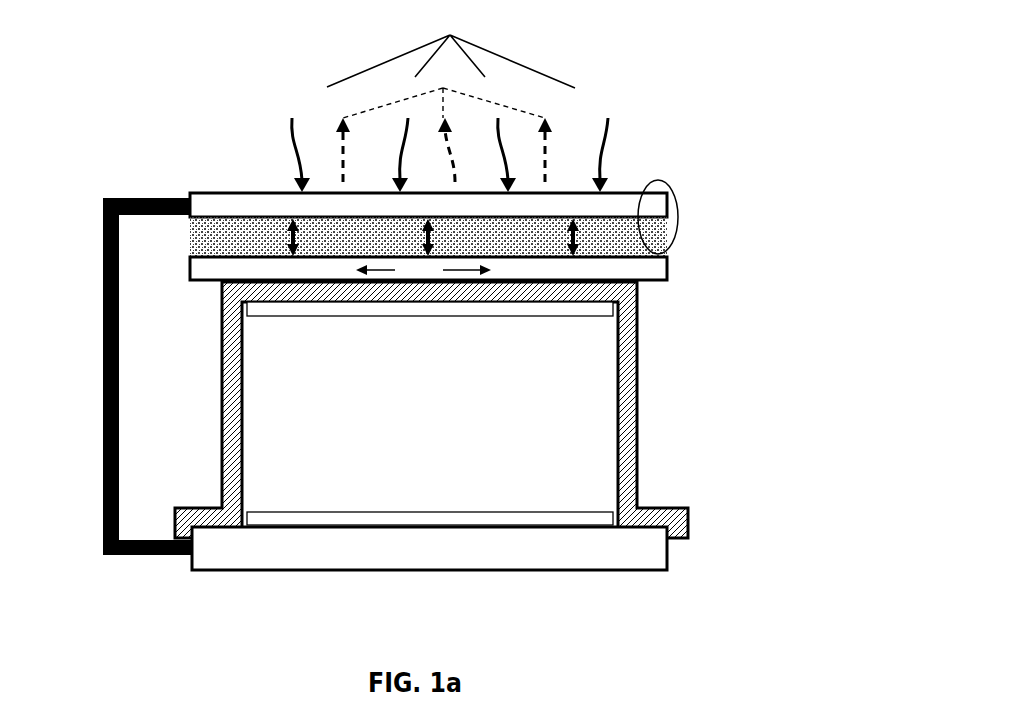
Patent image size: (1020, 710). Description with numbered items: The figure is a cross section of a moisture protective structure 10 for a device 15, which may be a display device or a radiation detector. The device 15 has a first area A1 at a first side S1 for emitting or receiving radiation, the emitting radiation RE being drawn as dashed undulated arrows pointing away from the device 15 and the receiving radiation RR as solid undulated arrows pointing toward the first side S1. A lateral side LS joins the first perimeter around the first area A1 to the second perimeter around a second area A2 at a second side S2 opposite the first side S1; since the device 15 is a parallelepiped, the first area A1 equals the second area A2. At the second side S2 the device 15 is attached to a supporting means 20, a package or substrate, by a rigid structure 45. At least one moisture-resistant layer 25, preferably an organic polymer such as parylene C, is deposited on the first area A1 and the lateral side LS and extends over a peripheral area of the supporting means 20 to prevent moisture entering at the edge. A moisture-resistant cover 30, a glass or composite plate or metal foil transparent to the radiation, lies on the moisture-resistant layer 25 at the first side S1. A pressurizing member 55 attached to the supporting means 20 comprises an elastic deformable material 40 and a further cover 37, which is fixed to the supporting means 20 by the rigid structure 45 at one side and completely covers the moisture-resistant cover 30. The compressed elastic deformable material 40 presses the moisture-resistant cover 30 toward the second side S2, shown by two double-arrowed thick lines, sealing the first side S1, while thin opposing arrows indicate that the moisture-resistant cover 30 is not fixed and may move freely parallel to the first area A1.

The moisture protective structure 10 is at (765, 193).
The device 15 is at (262, 477).
The supporting means 20 is at (570, 555).
The moisture-resistant layer 25 is at (627, 377).
The moisture-resistant cover 30 is at (650, 270).
The further cover 37 is at (663, 205).
The elastic deformable material 40 is at (197, 235).
The rigid structure 45 is at (102, 435).
The pressurizing member 55 is at (680, 227).
The first area A1 is at (437, 316).
The second area A2 is at (437, 512).
The lateral side LS is at (205, 403).
The first side S1 is at (207, 167).
The second side S2 is at (245, 585).
The receiving radiation RR is at (450, 97).
The emitting radiation RE is at (444, 124).